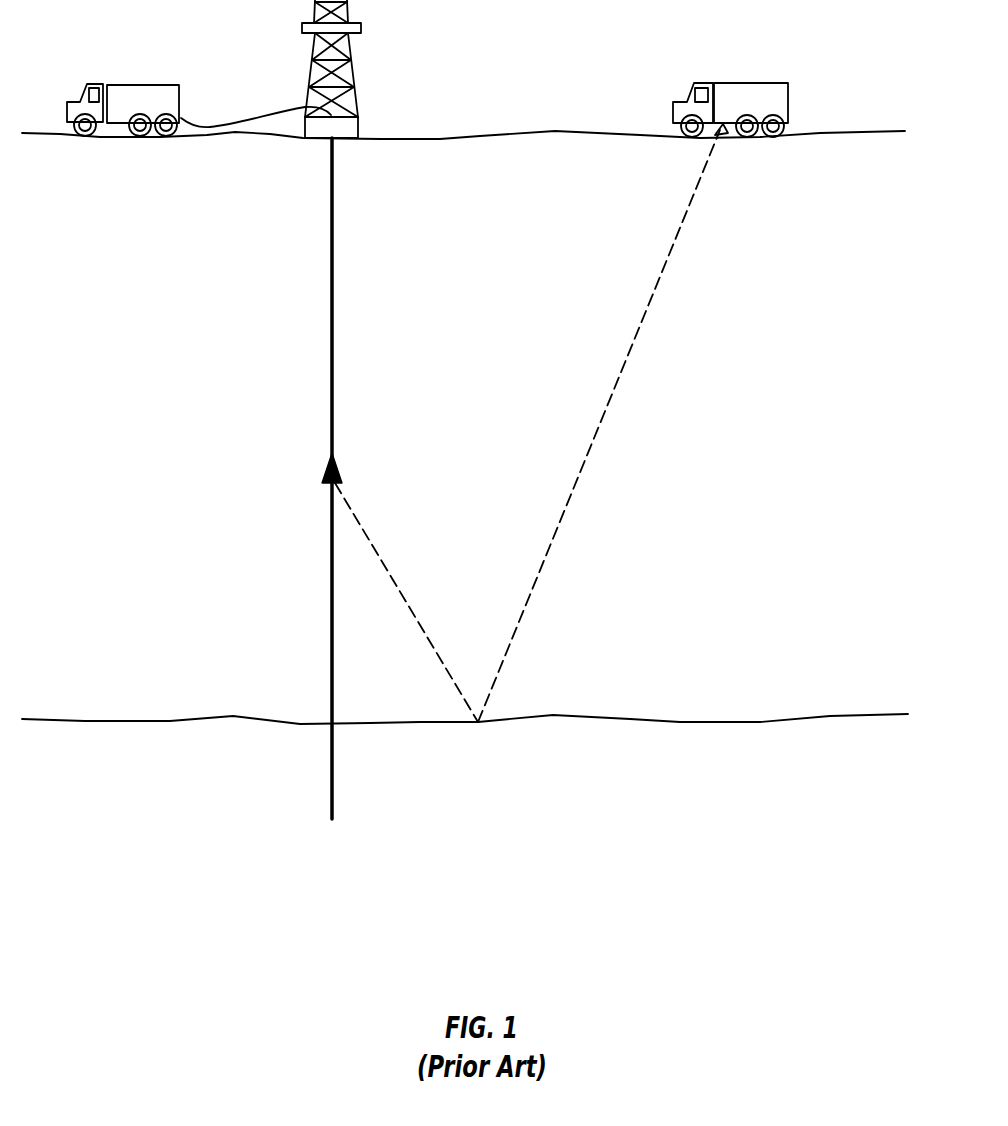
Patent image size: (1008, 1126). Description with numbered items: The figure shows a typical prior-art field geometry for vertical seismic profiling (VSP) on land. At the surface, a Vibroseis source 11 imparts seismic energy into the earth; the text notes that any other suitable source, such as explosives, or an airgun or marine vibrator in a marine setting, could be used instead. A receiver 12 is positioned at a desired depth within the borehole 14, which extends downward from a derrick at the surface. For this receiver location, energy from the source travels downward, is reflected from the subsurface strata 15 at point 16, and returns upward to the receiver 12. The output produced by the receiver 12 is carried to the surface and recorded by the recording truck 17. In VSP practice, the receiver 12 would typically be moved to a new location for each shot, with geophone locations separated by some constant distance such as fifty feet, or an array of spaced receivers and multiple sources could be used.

The Vibroseis source 11 is at (752, 83).
The receiver 12 is at (338, 470).
The borehole 14 is at (333, 218).
The subsurface strata 15 is at (632, 718).
The reflection point 16 is at (478, 722).
The recording truck 17 is at (143, 84).